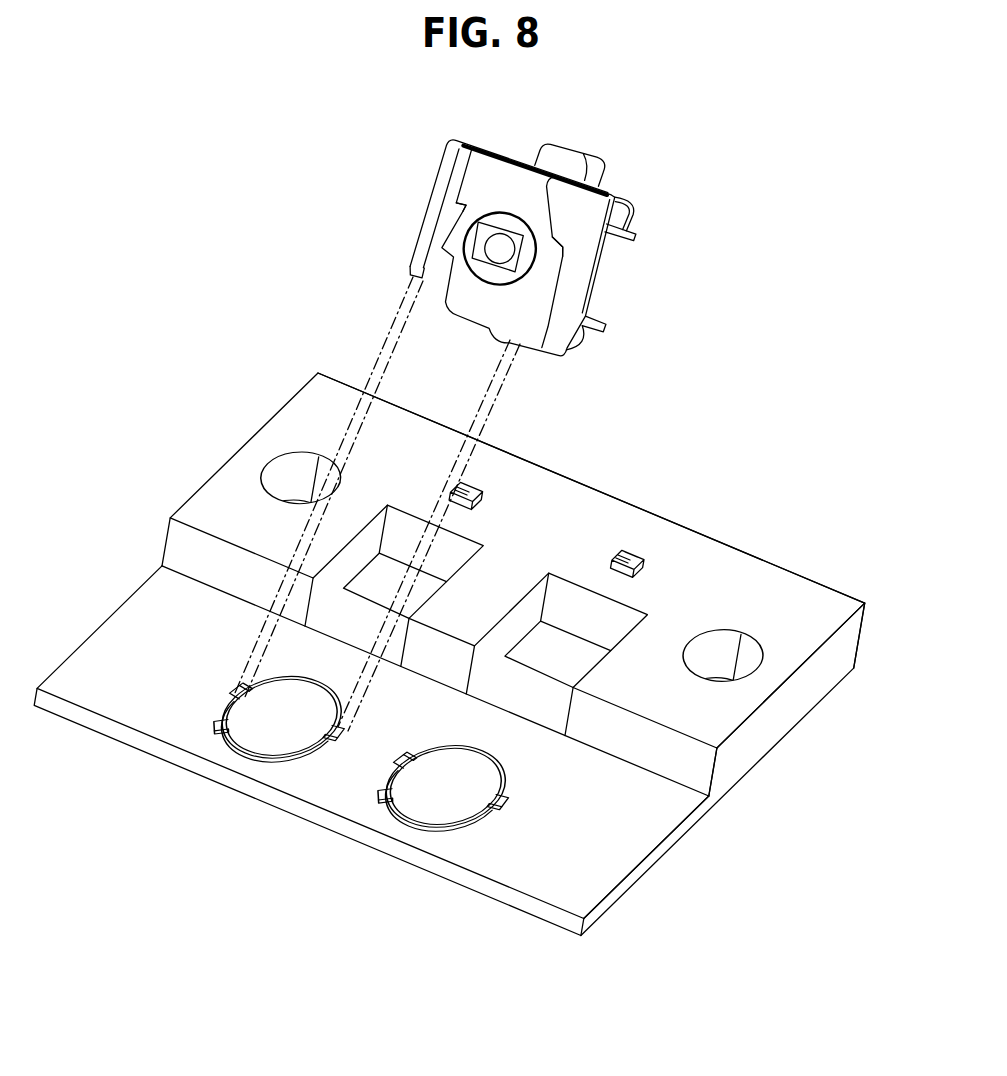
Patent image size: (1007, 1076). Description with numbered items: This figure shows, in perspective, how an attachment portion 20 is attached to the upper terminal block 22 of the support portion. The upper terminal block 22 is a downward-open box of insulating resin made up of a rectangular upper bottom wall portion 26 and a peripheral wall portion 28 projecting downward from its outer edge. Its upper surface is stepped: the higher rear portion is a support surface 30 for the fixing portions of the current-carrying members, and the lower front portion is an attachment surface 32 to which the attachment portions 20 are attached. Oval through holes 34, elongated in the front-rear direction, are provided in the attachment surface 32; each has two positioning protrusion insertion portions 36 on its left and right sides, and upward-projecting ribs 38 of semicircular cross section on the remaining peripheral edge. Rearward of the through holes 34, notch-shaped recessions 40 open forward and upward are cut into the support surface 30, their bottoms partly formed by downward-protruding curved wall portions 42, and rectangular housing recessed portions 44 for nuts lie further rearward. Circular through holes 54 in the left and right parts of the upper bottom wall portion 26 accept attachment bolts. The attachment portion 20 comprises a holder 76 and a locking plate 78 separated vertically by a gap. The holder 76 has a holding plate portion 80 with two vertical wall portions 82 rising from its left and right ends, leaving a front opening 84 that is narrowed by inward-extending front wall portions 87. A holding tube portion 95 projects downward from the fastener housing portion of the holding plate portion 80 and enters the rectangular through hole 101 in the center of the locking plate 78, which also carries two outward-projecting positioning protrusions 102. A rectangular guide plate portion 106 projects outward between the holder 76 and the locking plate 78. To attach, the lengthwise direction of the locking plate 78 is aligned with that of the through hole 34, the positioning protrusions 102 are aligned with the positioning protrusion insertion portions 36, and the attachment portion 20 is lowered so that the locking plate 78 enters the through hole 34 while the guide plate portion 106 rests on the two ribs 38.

The attachment portion 20 is at (532, 244).
The upper terminal block 22 is at (449, 654).
The upper bottom wall portion 26 is at (797, 602).
The peripheral wall portion 28 is at (812, 690).
The support surface 30 is at (513, 654).
The attachment surface 32 is at (92, 642).
The through hole 34 is at (262, 748).
The positioning protrusion insertion portion 36 is at (400, 775).
The rib 38 is at (225, 730).
The recession 40 is at (468, 552).
The curved wall portion 42 is at (524, 702).
The housing recessed portion 44 is at (634, 563).
The through hole 54 is at (760, 650).
The holder 76 is at (528, 244).
The locking plate 78 is at (512, 178).
The holding plate portion 80 is at (437, 195).
The vertical wall portion 82 is at (462, 136).
The front opening 84 is at (605, 308).
The front wall portion 87 is at (625, 217).
The holding tube portion 95 is at (500, 257).
The through hole 101 is at (487, 267).
The positioning protrusion 102 is at (452, 222).
The guide plate portion 106 is at (582, 208).